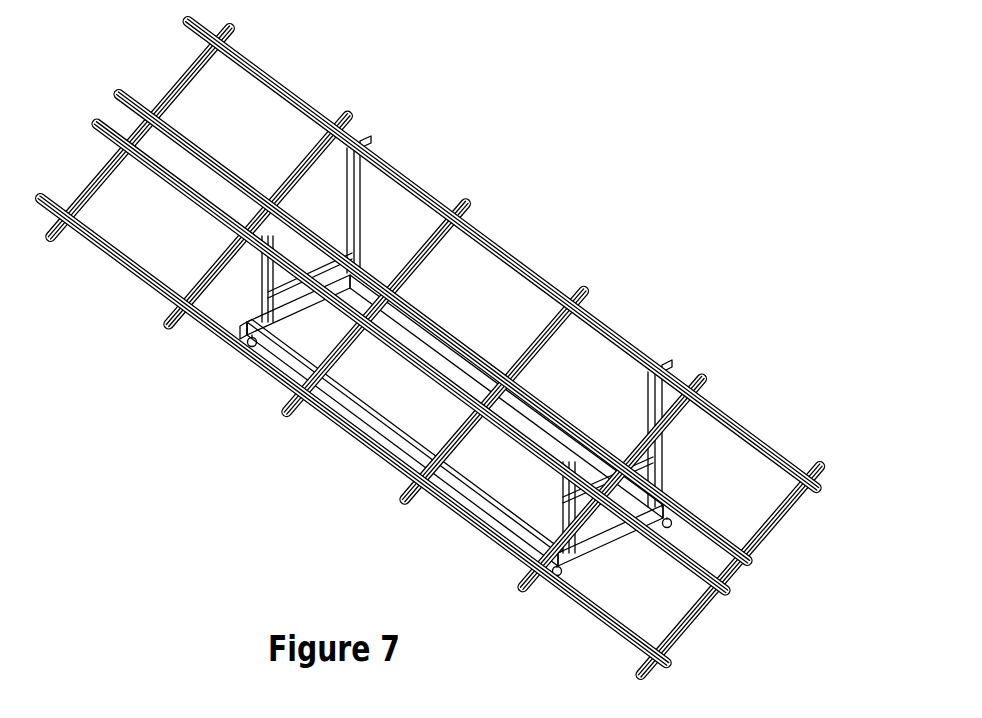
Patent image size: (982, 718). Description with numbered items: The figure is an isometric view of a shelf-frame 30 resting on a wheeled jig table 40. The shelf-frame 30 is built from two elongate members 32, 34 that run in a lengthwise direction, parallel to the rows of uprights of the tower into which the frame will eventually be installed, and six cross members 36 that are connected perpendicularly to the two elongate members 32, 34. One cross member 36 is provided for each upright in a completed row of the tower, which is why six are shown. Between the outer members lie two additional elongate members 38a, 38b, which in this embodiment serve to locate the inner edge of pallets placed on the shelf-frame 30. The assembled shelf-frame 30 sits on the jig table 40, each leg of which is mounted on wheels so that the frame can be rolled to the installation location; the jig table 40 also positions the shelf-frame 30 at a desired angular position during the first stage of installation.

The shelf-frame 30 is at (489, 359).
The elongate member 32 is at (592, 611).
The elongate member 34 is at (758, 440).
The cross member 36 is at (50, 241).
The additional elongate member 38a is at (732, 593).
The additional elongate member 38b is at (751, 558).
The jig table 40 is at (600, 387).